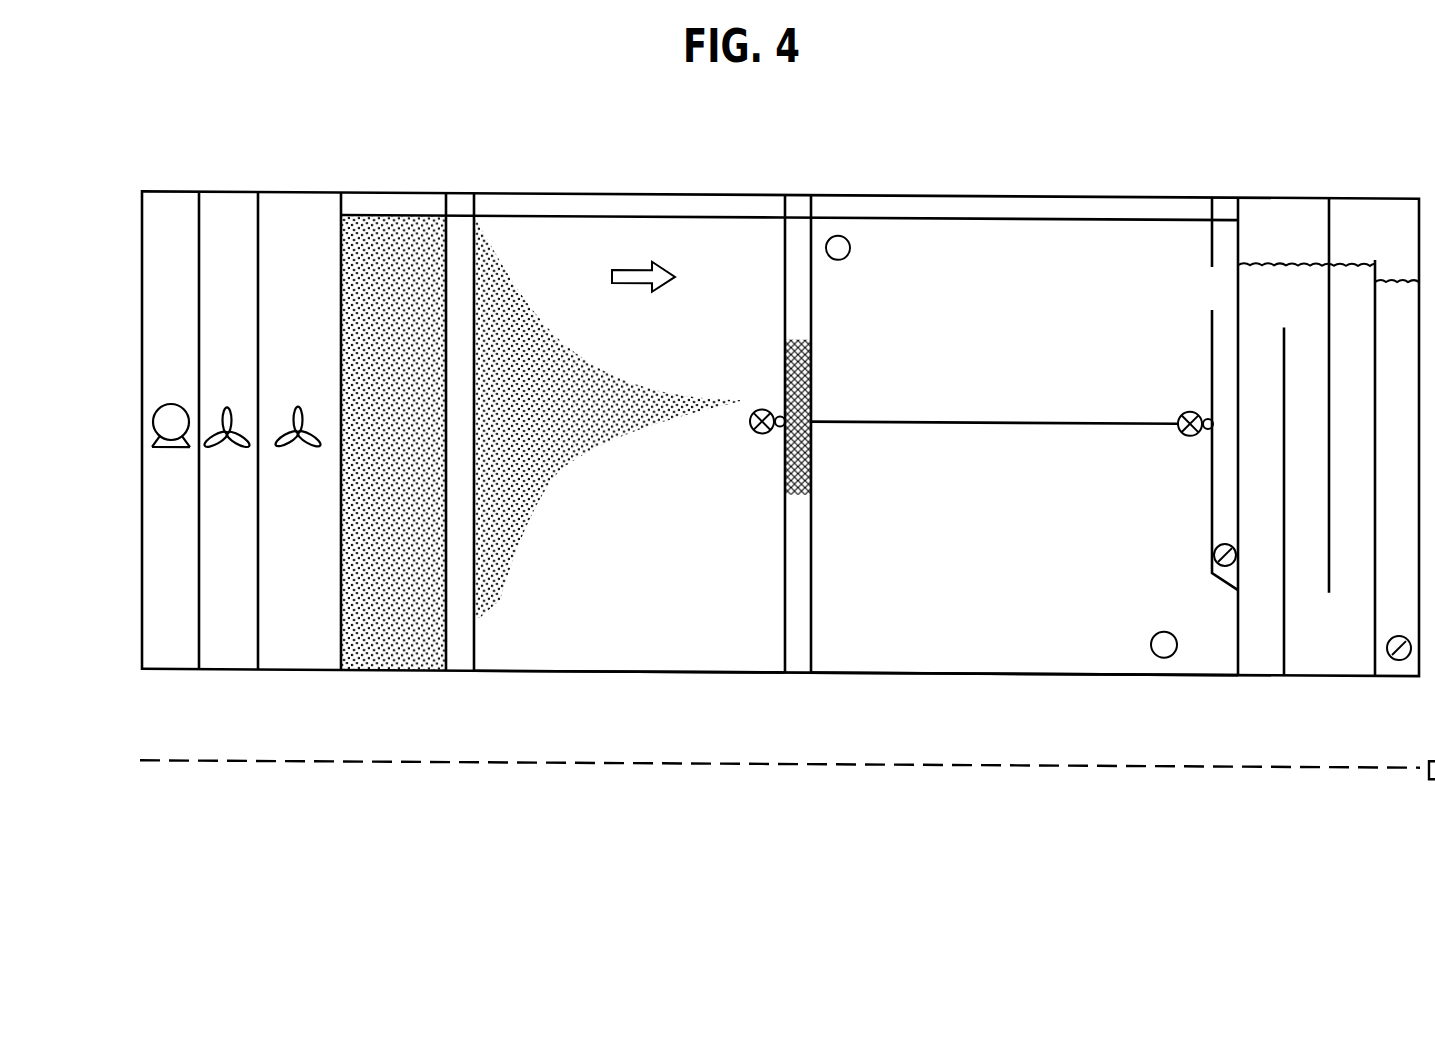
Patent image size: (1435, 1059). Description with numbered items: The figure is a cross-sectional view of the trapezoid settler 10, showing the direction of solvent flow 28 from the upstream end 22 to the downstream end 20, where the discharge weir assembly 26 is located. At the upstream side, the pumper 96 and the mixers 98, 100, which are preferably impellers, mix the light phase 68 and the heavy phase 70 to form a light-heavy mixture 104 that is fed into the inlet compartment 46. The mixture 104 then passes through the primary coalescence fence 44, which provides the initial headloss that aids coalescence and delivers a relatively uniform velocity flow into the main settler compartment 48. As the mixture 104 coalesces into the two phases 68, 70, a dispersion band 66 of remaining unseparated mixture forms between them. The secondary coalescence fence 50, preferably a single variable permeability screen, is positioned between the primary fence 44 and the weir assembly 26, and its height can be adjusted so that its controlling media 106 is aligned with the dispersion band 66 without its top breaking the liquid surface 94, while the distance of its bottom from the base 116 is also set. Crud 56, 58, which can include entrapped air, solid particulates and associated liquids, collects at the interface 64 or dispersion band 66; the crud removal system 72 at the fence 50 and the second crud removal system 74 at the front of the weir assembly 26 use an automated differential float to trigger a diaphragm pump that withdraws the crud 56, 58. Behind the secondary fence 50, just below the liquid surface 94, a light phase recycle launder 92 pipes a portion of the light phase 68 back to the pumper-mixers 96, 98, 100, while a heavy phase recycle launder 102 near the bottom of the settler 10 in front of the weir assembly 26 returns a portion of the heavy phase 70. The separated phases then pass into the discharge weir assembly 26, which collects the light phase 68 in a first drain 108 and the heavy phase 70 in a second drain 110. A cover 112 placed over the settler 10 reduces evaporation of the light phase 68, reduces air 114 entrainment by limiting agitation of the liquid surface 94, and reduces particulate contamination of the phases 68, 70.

The trapezoid settler 10 is at (571, 185).
The downstream end 20 is at (1371, 165).
The upstream end 22 is at (355, 166).
The discharge weir assembly 26 is at (1337, 648).
The direction of solvent flow 28 is at (659, 266).
The primary coalescence fence 44 is at (462, 653).
The inlet compartment 46 is at (400, 654).
The main settler compartment 48 is at (626, 652).
The secondary coalescence fence 50 is at (806, 651).
The crud 56 is at (778, 410).
The crud 58 is at (1207, 407).
The interface 64 is at (945, 421).
The dispersion band 66 is at (558, 409).
The light phase 68 is at (1058, 244).
The heavy phase 70 is at (992, 650).
The crud removal system 72 is at (764, 431).
The second crud removal system 74 is at (1192, 429).
The light phase recycle launder 92 is at (838, 243).
The liquid surface 94 is at (955, 212).
The pumper 96 is at (185, 654).
The mixer 98 is at (243, 654).
The mixer 100 is at (312, 654).
The heavy phase recycle launder 102 is at (1165, 652).
The light-heavy mixture 104 is at (415, 210).
The controlling media 106 is at (815, 367).
The first drain 108 is at (1227, 560).
The second drain 110 is at (1399, 653).
The cover 112 is at (722, 190).
The air 114 is at (786, 212).
The base 116 is at (914, 670).